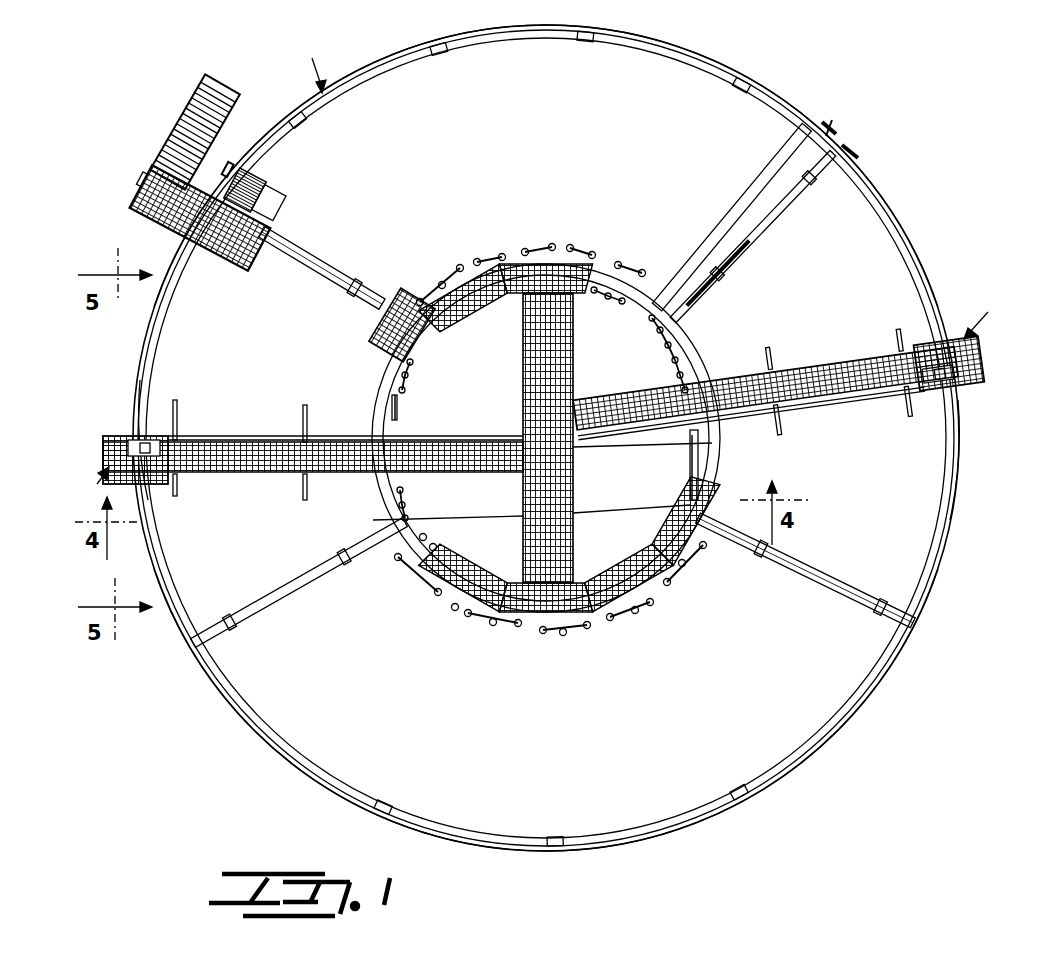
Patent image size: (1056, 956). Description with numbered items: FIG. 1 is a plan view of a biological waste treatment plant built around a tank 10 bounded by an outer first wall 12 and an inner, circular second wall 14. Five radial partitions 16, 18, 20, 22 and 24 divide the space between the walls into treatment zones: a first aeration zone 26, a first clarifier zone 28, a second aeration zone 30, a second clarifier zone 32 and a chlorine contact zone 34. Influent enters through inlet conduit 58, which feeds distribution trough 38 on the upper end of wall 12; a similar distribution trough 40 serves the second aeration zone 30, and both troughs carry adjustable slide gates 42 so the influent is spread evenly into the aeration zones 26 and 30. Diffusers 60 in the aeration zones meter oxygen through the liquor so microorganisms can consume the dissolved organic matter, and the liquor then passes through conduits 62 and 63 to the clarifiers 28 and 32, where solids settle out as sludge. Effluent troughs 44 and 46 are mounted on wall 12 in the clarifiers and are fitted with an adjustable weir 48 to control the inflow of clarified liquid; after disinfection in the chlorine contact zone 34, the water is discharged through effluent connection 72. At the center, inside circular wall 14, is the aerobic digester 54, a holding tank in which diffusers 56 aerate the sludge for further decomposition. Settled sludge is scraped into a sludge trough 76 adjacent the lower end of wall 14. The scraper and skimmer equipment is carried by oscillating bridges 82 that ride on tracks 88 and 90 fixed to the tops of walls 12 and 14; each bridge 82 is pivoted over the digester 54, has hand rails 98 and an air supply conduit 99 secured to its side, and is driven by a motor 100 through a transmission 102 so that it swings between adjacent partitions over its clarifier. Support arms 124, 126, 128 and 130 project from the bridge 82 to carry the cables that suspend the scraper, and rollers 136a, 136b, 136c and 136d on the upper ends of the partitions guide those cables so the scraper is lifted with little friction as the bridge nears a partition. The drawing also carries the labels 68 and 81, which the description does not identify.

The tank 10 is at (309, 63).
The first wall 12 is at (375, 52).
The second wall 14 is at (633, 287).
The partition 16 is at (295, 265).
The partition 18 is at (273, 600).
The partition 20 is at (830, 577).
The partition 22 is at (762, 245).
The partition 24 is at (740, 197).
The first aeration zone 26 is at (665, 70).
The first clarifier zone 28 is at (190, 534).
The second aeration zone 30 is at (820, 697).
The second clarifier zone 32 is at (905, 493).
The chlorine contact zone 34 is at (860, 150).
The distribution trough 38 is at (377, 71).
The distribution trough 40 is at (268, 742).
The adjustable slide gates 42 is at (445, 60).
The effluent trough 44 is at (140, 380).
The effluent trough 46 is at (948, 550).
The adjustable weir 48 is at (140, 410).
The aerobic digester 54 is at (622, 365).
The diffusers 56 is at (607, 300).
The inlet conduit 58 is at (215, 180).
The diffusers 60 is at (445, 280).
The conduit 62 is at (400, 408).
The conduit 63 is at (690, 445).
The lower ring segment 68 is at (614, 518).
The effluent connection 72 is at (835, 125).
The sludge trough 76 is at (375, 345).
The beam rail 81 is at (350, 290).
The oscillating bridges 82 is at (544, 396).
The track 88 is at (143, 345).
The track 90 is at (405, 375).
The hand rails 98 is at (888, 395).
The air supply conduit 99 is at (470, 437).
The motor 100 is at (100, 450).
The transmission 102 is at (103, 440).
The support arm 124 is at (178, 490).
The support arm 126 is at (178, 407).
The support arm 128 is at (303, 490).
The support arm 130 is at (303, 410).
The roller 136a is at (225, 632).
The roller 136b is at (343, 560).
The roller 136c is at (350, 295).
The roller 136d is at (882, 600).